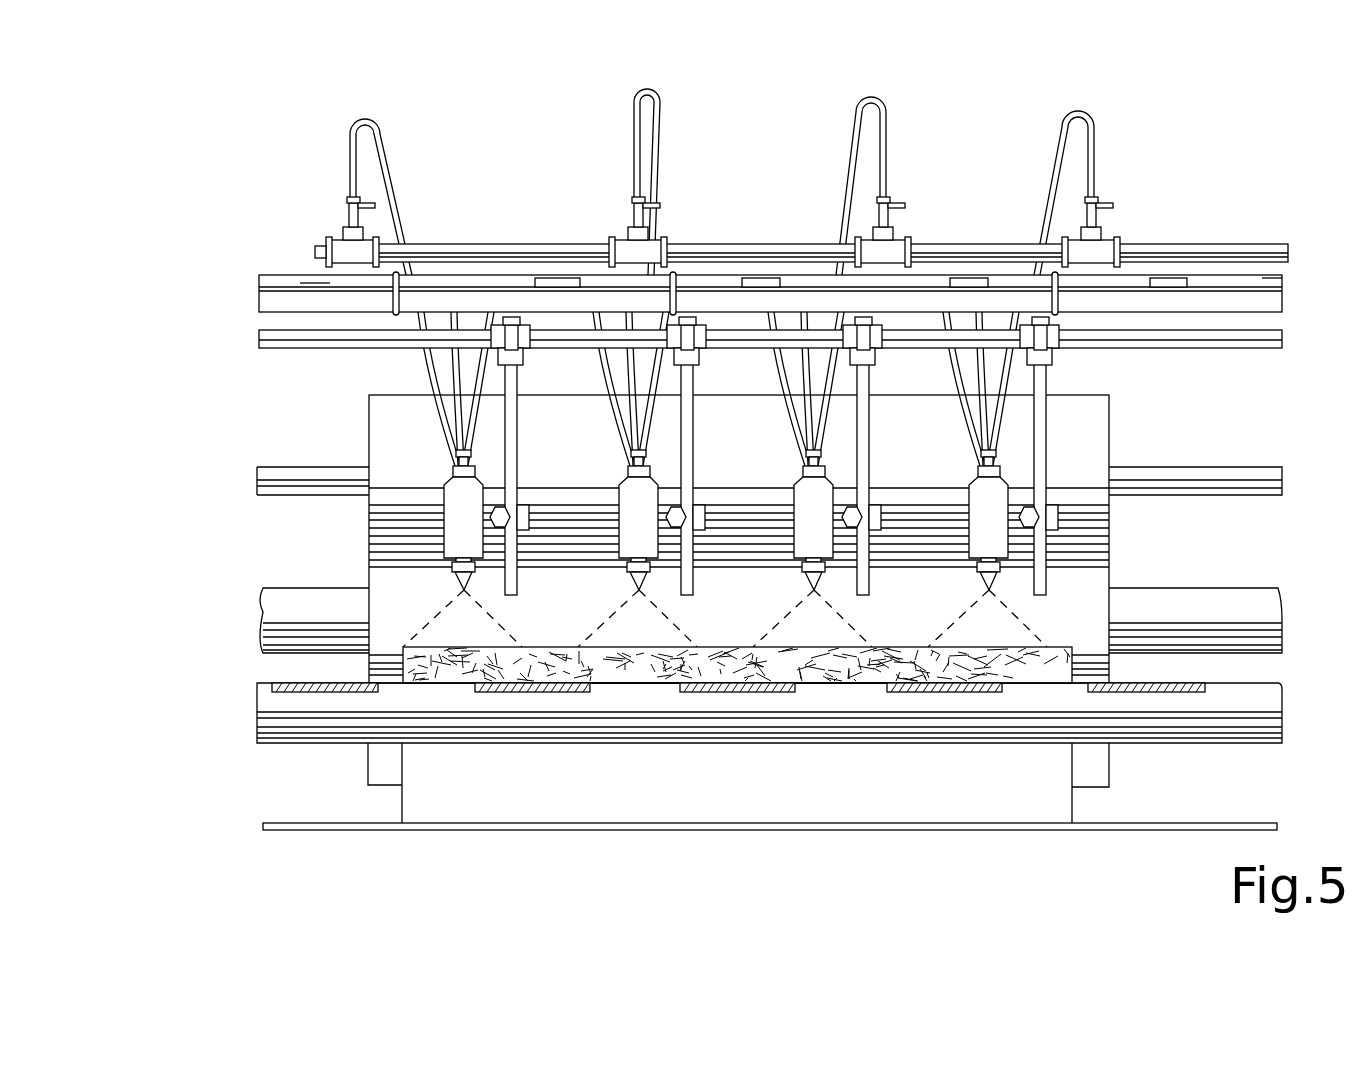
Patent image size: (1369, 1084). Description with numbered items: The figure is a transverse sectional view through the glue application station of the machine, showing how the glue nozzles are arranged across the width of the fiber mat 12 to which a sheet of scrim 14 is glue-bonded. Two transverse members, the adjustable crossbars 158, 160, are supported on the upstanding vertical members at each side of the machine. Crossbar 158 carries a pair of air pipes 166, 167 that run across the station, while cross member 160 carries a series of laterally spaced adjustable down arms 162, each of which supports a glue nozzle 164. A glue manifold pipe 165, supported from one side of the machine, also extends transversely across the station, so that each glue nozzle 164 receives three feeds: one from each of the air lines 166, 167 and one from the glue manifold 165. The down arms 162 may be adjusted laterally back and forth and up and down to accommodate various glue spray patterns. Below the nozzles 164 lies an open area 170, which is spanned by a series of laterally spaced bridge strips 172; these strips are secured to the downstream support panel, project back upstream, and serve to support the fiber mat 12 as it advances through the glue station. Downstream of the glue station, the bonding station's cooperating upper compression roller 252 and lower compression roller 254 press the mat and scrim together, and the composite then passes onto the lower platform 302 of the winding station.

The bonded non-woven fiber mat 12 is at (400, 665).
The scrim 14 is at (1085, 433).
The adjustable crossbar 158 is at (262, 297).
The adjustable crossbar 160 is at (262, 337).
The adjustable down arm 162 is at (507, 385).
The glue nozzle 164 is at (455, 515).
The glue manifold pipe 165 is at (470, 245).
The air pipe 166 is at (300, 283).
The air pipe 167 is at (1262, 278).
The open area 170 is at (638, 692).
The bridge strip 172 is at (282, 688).
The upper compression roller 252 is at (1235, 595).
The lower compression roller 254 is at (1233, 693).
The lower platform 302 is at (307, 828).